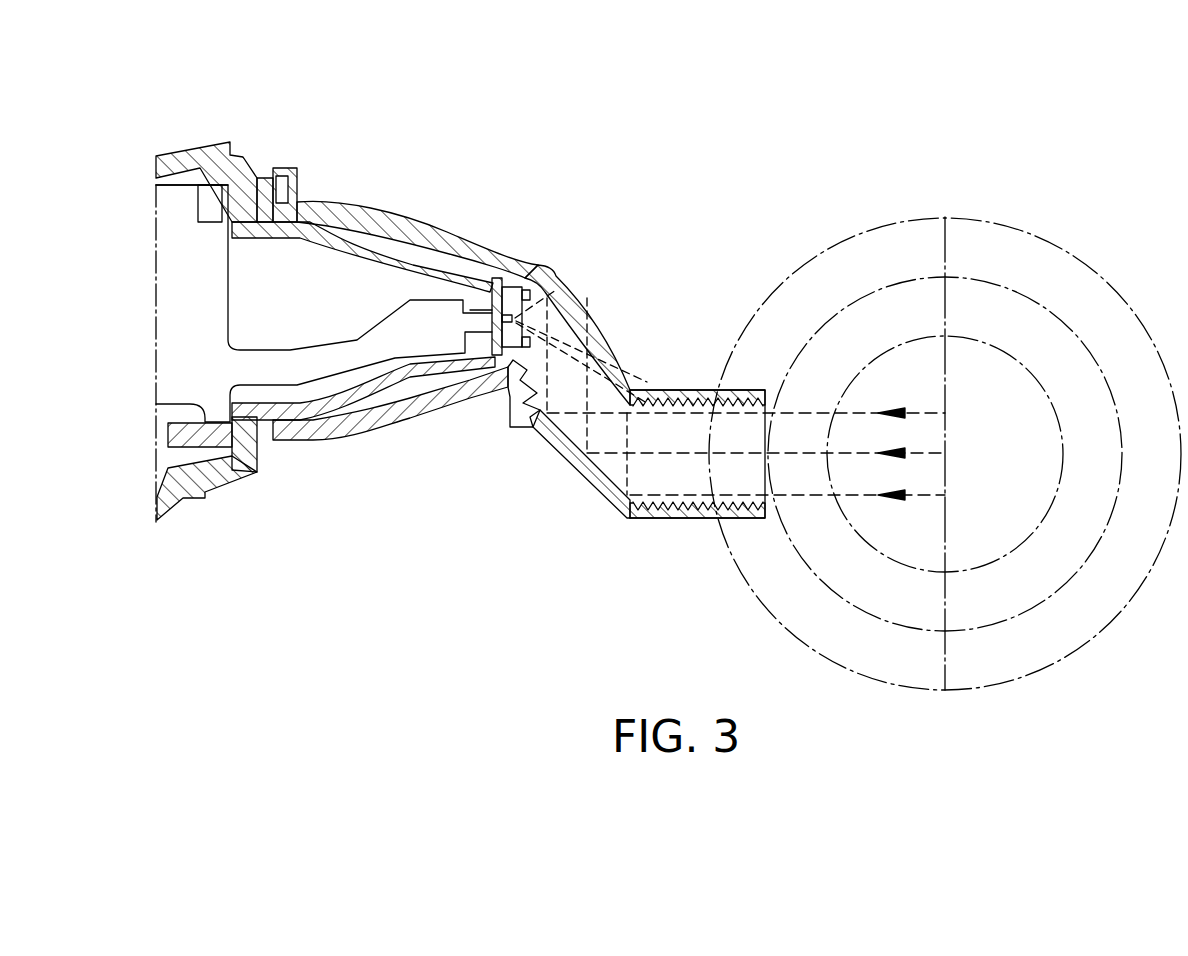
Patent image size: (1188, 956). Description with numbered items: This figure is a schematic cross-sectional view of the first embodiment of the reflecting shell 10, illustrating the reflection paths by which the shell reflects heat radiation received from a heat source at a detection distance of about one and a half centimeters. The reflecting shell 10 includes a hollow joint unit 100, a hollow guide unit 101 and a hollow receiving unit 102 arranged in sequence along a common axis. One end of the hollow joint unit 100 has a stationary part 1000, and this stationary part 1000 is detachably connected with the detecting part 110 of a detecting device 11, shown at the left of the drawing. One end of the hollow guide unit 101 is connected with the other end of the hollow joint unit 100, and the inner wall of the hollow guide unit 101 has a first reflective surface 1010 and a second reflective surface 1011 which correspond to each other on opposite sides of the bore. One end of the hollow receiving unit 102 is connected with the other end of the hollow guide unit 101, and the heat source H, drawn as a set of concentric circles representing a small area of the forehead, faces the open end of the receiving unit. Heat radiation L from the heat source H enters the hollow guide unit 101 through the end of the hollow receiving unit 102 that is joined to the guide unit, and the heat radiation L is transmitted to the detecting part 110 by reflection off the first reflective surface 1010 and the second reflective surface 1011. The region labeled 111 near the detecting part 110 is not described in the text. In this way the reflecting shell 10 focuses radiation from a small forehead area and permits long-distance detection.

The reflecting shell 10 is at (463, 295).
The detecting device 11 is at (189, 138).
The hollow joint unit 100 is at (458, 245).
The stationary part 1000 is at (296, 187).
The hollow guide unit 101 is at (701, 50).
The first reflective surface 1010 is at (573, 453).
The second reflective surface 1011 is at (613, 347).
The hollow receiving unit 102 is at (693, 392).
The detecting part 110 is at (370, 257).
The nozzle orifice 111 is at (508, 316).
The heat radiation L is at (811, 497).
The heat source H is at (1112, 272).